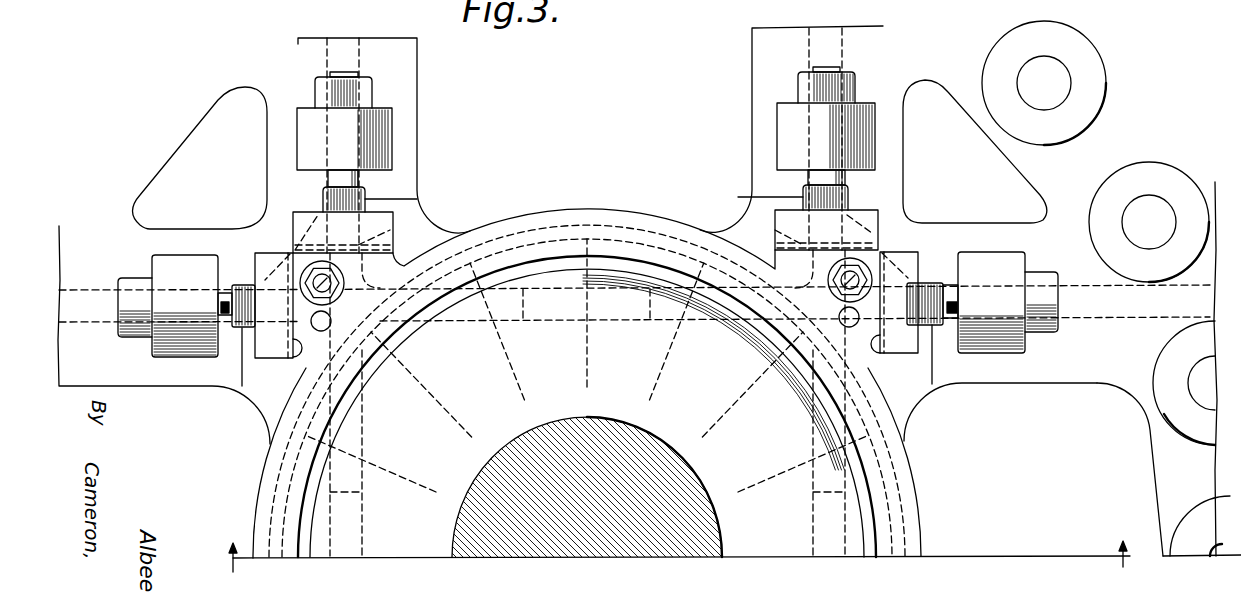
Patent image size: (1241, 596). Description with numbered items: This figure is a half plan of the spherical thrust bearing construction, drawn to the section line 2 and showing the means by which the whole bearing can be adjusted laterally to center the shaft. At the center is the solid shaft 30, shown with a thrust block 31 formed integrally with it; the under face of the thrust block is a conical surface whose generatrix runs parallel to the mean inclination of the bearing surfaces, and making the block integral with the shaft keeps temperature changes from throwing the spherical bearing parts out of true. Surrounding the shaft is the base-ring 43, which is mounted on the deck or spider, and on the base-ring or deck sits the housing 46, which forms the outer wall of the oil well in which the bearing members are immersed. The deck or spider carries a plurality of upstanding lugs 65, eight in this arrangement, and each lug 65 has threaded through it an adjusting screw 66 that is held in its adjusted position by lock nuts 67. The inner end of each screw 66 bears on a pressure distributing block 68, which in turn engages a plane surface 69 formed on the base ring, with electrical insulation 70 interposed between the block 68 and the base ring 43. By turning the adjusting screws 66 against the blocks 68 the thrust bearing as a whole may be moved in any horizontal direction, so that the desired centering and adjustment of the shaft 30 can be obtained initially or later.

The section line 2- 2 is at (680, 559).
The shaft 30 is at (510, 542).
The thrust block 31 is at (388, 540).
The base-ring 43 is at (470, 243).
The housing 46 is at (250, 224).
The upstanding lugs 65 is at (392, 120).
The adjusting screw 66 is at (362, 180).
The lock nuts 67 is at (370, 82).
The pressure distributing block 68 is at (270, 253).
The plane surface 69 is at (297, 358).
The electrical insulation 70 is at (386, 232).